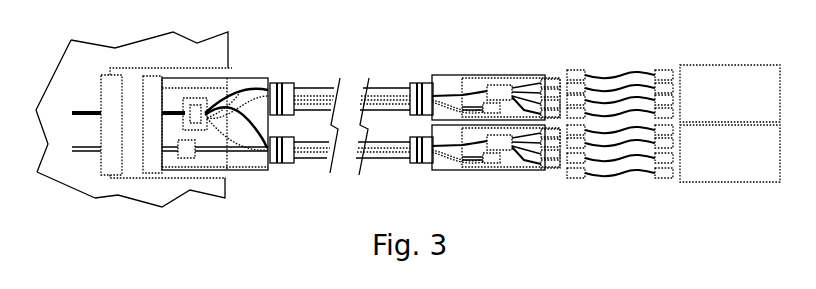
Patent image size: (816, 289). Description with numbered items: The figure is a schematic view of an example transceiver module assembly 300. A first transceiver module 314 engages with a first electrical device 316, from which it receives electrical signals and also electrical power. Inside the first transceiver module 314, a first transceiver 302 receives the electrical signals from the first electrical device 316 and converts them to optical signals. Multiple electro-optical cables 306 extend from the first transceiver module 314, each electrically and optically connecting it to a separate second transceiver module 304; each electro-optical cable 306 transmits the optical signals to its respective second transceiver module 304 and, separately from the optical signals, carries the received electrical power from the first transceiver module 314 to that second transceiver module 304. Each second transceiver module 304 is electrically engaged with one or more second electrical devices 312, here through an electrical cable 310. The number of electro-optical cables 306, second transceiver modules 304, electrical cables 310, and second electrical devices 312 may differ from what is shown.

The transceiver module assembly 300 is at (88, 26).
The first transceiver 302 is at (205, 118).
The second transceiver module 304 is at (471, 62).
The electro-optical cable 306 is at (389, 70).
The electrical cable 310 is at (671, 196).
The second electrical device 312 is at (730, 123).
The first transceiver module 314 is at (252, 70).
The first electrical device 316 is at (76, 170).